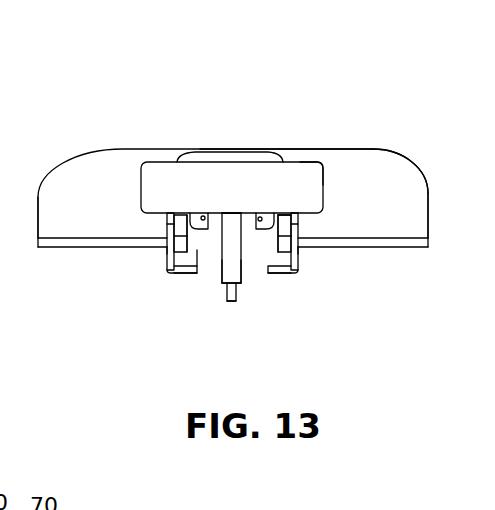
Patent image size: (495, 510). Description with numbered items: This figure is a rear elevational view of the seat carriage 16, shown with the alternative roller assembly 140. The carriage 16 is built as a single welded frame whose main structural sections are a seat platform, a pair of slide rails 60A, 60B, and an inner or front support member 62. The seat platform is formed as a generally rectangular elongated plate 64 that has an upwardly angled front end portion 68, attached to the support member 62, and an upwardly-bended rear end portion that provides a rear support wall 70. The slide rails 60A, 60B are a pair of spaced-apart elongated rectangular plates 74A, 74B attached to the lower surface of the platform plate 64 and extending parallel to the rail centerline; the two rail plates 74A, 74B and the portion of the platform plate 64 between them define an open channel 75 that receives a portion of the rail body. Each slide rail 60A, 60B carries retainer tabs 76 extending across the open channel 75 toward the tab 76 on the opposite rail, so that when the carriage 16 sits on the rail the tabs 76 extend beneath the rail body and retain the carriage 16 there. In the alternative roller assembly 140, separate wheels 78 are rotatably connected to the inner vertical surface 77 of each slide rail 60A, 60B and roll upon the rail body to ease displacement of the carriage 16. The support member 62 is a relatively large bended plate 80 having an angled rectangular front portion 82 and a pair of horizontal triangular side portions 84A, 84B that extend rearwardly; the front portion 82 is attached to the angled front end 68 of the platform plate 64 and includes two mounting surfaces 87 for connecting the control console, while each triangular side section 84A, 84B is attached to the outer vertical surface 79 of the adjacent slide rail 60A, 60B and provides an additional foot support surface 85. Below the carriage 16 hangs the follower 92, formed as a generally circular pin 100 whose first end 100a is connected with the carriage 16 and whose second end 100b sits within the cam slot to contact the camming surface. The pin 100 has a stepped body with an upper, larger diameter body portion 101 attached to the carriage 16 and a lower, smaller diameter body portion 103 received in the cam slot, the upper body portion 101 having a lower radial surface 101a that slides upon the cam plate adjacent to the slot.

The seat carriage 16 is at (140, 96).
The slide rail 60A is at (165, 268).
The slide rail 60B is at (299, 266).
The support member 62 is at (316, 146).
The platform plate 64 is at (330, 171).
The front end portion 68 is at (228, 154).
The rear support wall 70 is at (160, 168).
The rail plate 74A is at (168, 254).
The rail plate 74B is at (300, 254).
The open channel 75 is at (205, 250).
The retainer tab 76 is at (188, 271).
The inner vertical surface 77 is at (186, 246).
The wheel 78 is at (180, 236).
The outer vertical surface 79 is at (170, 224).
The bended plate 80 is at (95, 178).
The front portion 82 is at (374, 172).
The side portion 84A is at (67, 248).
The side portion 84B is at (398, 248).
The foot support surface 85 is at (90, 238).
The mounting surface 87 is at (193, 220).
The follower 92 is at (210, 289).
The pin 100 is at (240, 294).
The first end 100a is at (228, 213).
The second end 100b is at (235, 302).
The upper body portion 101 is at (242, 284).
The lower radial surface 101a is at (246, 270).
The lower body portion 103 is at (225, 285).
The roller assembly 140 is at (292, 207).